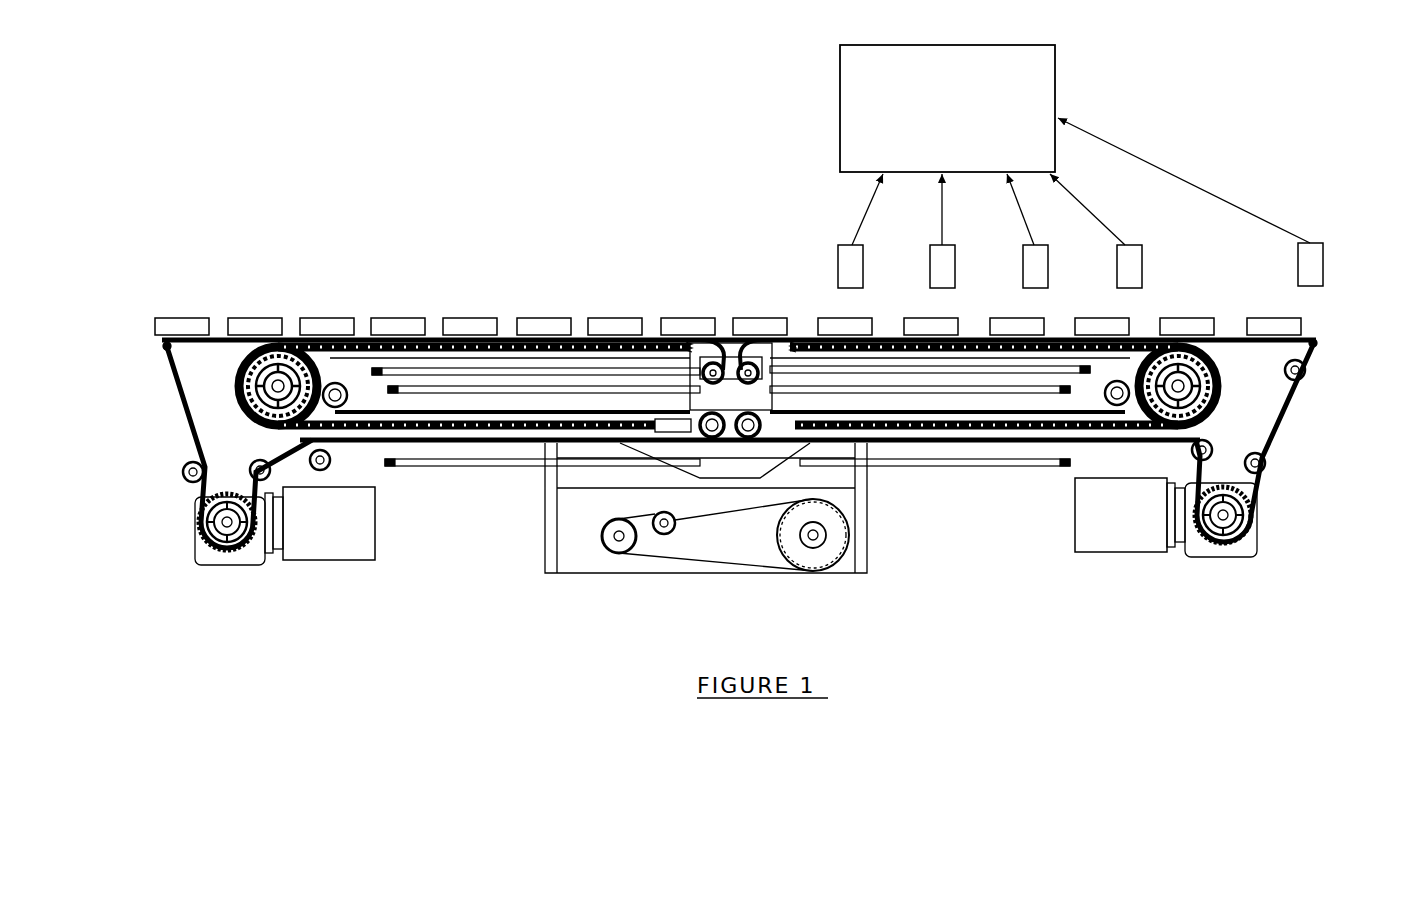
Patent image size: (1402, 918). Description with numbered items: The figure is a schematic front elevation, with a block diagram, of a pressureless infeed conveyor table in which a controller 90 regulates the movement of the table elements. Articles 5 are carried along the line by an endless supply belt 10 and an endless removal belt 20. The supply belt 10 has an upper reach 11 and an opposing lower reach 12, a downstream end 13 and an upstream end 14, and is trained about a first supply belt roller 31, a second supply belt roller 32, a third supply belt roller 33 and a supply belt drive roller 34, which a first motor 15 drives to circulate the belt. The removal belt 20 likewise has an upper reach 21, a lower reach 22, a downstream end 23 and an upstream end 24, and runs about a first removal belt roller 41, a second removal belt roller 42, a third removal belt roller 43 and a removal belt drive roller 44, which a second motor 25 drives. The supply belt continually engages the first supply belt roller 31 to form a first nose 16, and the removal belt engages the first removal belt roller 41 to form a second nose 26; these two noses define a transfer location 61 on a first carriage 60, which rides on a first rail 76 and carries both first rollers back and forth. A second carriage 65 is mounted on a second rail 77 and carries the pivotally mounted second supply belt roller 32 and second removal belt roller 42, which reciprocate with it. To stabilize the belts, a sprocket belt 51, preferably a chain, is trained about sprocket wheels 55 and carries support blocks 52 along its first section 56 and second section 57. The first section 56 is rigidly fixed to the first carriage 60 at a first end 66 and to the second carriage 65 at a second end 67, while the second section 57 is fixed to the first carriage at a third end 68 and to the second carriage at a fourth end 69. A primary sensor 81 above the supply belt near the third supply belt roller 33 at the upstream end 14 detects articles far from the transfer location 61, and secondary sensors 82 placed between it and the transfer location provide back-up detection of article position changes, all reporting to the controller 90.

The articles 5 is at (272, 317).
The endless supply belt 10 is at (1275, 402).
The upper reach 11 is at (1057, 335).
The lower reach 12 is at (1098, 442).
The downstream end 13 is at (748, 312).
The upstream end 14 is at (1310, 310).
The first motor 15 is at (1128, 555).
The first nose 16 is at (755, 302).
The endless removal belt 20 is at (183, 425).
The upper reach 21 is at (437, 336).
The lower reach 22 is at (433, 449).
The downstream end 23 is at (165, 312).
The upstream end 24 is at (703, 309).
The second motor 25 is at (372, 563).
The second nose 26 is at (722, 331).
The first supply belt roller 31 is at (753, 330).
The second supply belt roller 32 is at (750, 440).
The third supply belt roller 33 is at (1314, 333).
The supply belt drive roller 34 is at (1257, 525).
The first removal belt roller 41 is at (708, 333).
The second removal belt roller 42 is at (710, 440).
The third removal belt roller 43 is at (161, 352).
The removal belt drive roller 44 is at (198, 537).
The sprocket belt 51 is at (540, 429).
The support blocks 52 is at (362, 450).
The sprocket wheels 55 is at (270, 365).
The first section 56 is at (238, 388).
The second section 57 is at (1222, 384).
The first carriage 60 is at (796, 433).
The transfer location 61 is at (730, 328).
The second carriage 65 is at (786, 440).
The first end 66 is at (673, 335).
The second end 67 is at (650, 430).
The third end 68 is at (782, 334).
The fourth end 69 is at (806, 425).
The first rail 76 is at (508, 403).
The second rail 77 is at (1043, 468).
The primary sensor 81 is at (1190, 202).
The secondary sensors 82 is at (990, 231).
The controller 90 is at (967, 116).